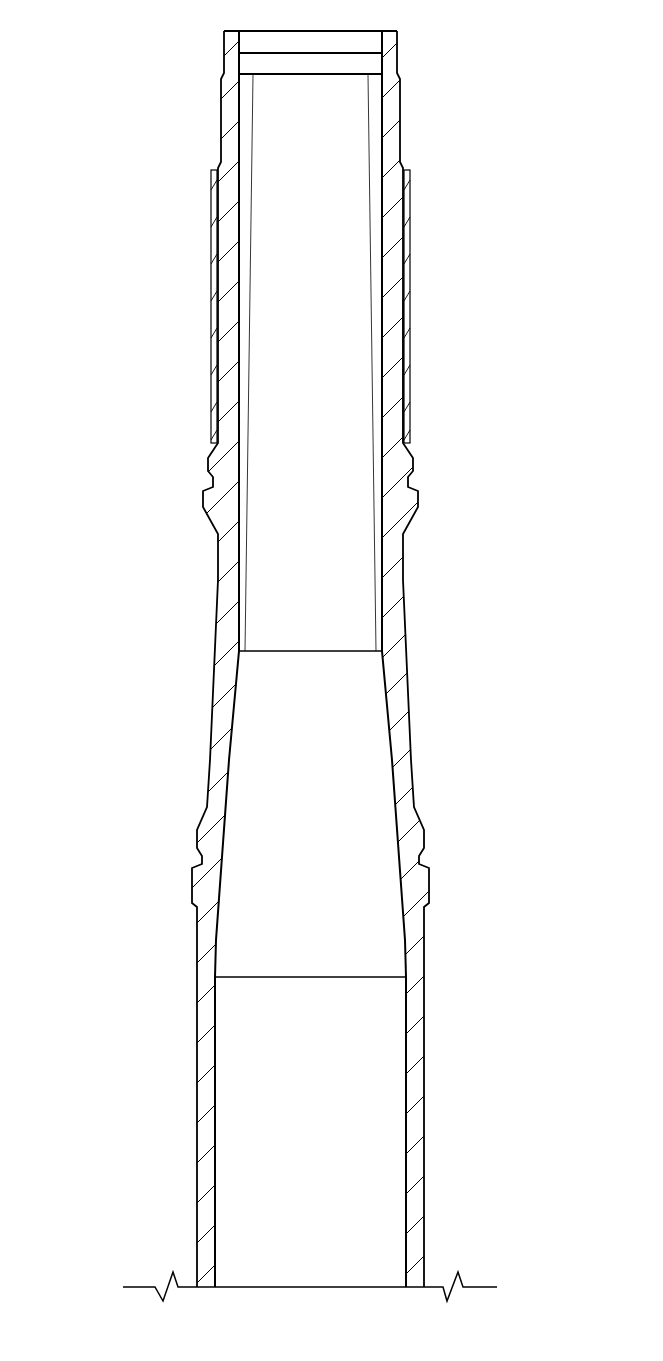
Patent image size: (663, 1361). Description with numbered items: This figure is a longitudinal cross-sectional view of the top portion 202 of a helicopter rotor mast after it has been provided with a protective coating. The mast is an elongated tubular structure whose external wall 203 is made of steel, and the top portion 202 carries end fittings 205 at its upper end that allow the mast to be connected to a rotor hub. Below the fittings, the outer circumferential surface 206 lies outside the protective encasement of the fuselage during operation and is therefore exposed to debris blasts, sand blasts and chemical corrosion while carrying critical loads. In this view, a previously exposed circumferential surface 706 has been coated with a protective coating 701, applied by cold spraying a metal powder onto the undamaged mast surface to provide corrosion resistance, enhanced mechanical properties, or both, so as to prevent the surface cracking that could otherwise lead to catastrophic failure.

The top portion 202 is at (105, 202).
The external wall 203 is at (425, 1143).
The end fittings 205 is at (398, 40).
The outer circumferential surface 206 is at (400, 148).
The protective coating 701 is at (212, 338).
The previously exposed circumferential surface 706 is at (405, 390).